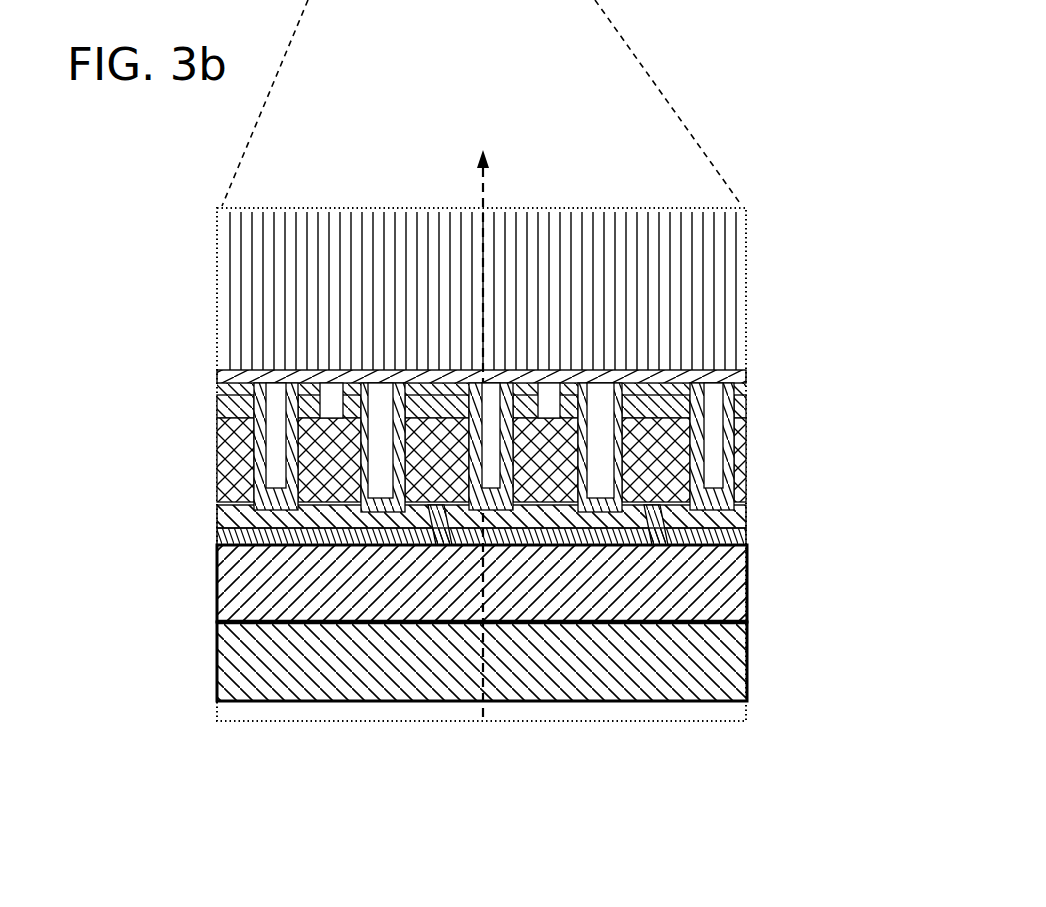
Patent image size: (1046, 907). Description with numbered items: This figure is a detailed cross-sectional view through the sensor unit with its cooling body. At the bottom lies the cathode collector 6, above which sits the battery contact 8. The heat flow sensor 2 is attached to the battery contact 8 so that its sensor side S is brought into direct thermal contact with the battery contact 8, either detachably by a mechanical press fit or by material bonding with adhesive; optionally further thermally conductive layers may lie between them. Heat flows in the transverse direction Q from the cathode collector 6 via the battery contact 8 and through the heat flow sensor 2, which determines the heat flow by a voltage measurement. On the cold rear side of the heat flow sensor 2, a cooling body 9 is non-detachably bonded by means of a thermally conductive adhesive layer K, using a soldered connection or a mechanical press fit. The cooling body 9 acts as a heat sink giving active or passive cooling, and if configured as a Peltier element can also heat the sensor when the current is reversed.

The cooling body 9 is at (366, 325).
The thermally conductive adhesive layer K is at (612, 381).
The heat flow sensor 2 is at (757, 380).
The sensor side S is at (697, 552).
The battery contact 8 is at (328, 607).
The cathode collector 6 is at (596, 690).
The transverse direction Q is at (492, 465).